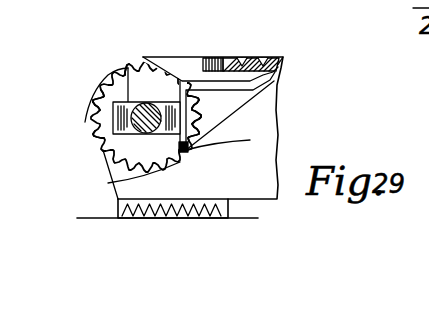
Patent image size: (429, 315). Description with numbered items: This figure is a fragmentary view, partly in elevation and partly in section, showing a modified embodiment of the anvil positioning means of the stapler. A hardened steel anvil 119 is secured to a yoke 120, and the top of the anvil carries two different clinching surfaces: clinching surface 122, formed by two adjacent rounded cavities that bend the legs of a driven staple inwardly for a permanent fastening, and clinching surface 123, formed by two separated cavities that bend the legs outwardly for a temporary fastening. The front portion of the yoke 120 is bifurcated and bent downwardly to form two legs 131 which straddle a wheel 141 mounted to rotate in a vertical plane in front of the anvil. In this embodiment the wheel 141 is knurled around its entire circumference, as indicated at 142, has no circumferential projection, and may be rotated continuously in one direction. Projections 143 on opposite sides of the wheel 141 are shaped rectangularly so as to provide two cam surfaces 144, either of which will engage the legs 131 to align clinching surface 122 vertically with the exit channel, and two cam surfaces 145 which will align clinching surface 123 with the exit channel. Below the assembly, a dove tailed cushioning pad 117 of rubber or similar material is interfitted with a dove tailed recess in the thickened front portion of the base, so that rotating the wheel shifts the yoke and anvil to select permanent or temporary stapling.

The cushioning pad 117 is at (207, 243).
The anvil 119 is at (248, 34).
The yoke 120 is at (263, 77).
The clinching surface 122 is at (290, 48).
The clinching surface 123 is at (280, 67).
The legs 131 is at (258, 166).
The wheel 141 is at (152, 135).
The knurling 142 is at (93, 107).
The projections 143 is at (112, 122).
The cam surfaces 144 is at (143, 53).
The cam surfaces 145 is at (98, 97).